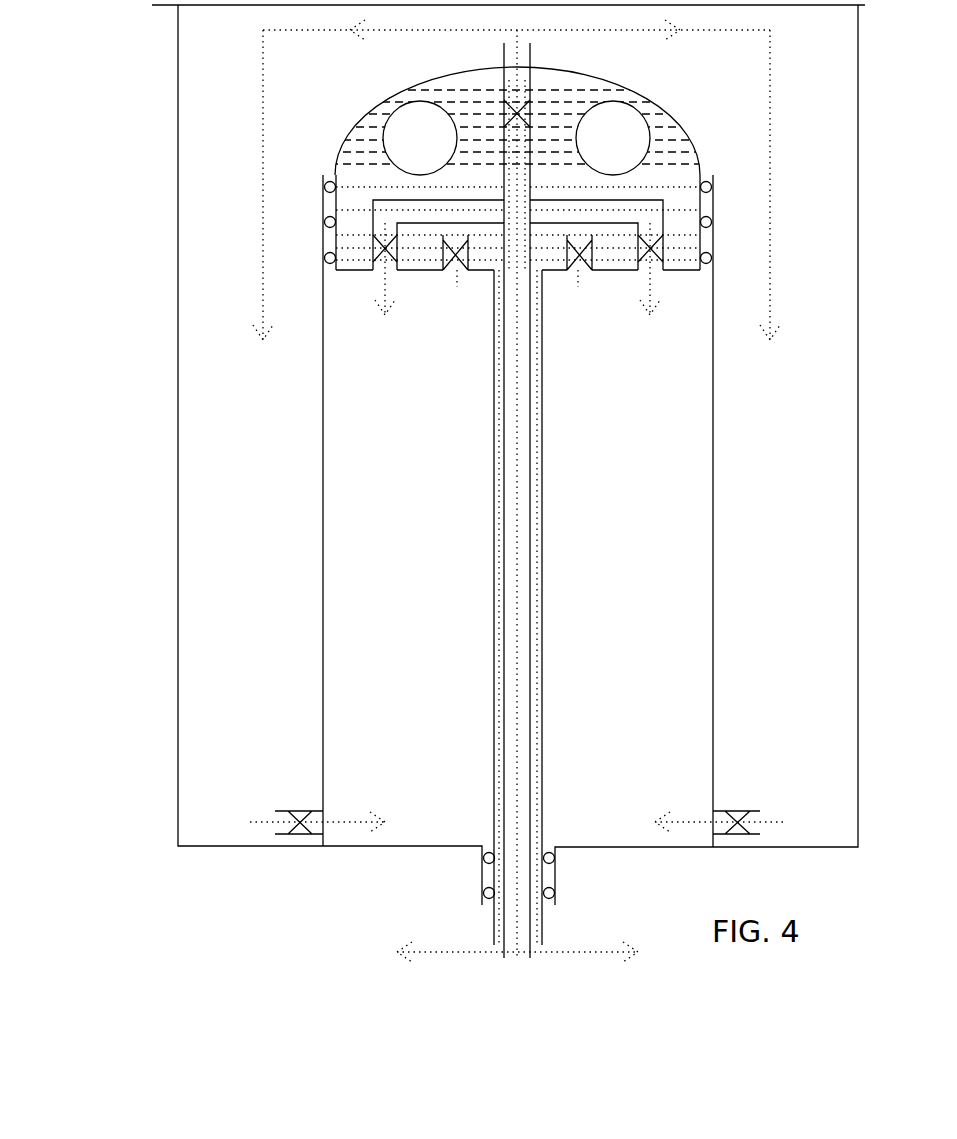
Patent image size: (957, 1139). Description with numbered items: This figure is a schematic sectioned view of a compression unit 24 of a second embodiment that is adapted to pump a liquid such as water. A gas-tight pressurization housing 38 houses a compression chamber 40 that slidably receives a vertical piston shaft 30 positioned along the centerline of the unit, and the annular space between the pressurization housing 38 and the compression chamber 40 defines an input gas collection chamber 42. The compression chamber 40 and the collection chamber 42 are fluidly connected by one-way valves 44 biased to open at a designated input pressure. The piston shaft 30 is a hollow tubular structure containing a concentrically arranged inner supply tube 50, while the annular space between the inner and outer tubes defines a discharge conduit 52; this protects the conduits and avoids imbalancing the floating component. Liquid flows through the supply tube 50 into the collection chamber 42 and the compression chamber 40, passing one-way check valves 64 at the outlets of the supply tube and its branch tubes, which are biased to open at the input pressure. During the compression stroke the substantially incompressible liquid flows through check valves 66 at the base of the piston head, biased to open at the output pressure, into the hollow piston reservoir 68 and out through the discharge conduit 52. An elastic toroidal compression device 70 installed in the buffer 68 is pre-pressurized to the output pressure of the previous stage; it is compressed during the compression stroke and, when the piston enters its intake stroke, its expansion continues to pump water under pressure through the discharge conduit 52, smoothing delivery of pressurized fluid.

The compression unit 24 is at (84, 452).
The piston shaft 30 is at (493, 597).
The pressurization housing 38 is at (518, 455).
The compression chamber 40 is at (647, 569).
The input gas collection chamber 42 is at (793, 486).
The one-way valves 44 is at (737, 808).
The inner input gas supply tube 50 is at (515, 918).
The gas discharge conduit 52 is at (535, 920).
The one-way check valves 64 is at (507, 127).
The one-way check valves 66 is at (457, 258).
The piston reservoir 68 is at (378, 150).
The elastic toroidal compression device 70 is at (640, 100).